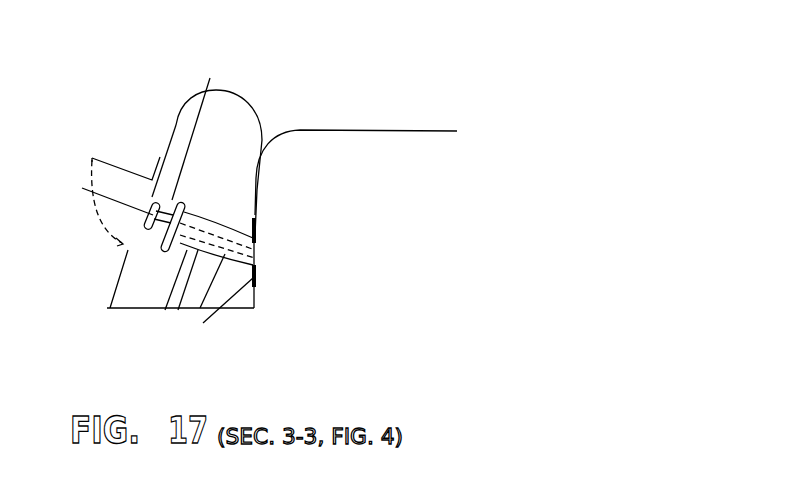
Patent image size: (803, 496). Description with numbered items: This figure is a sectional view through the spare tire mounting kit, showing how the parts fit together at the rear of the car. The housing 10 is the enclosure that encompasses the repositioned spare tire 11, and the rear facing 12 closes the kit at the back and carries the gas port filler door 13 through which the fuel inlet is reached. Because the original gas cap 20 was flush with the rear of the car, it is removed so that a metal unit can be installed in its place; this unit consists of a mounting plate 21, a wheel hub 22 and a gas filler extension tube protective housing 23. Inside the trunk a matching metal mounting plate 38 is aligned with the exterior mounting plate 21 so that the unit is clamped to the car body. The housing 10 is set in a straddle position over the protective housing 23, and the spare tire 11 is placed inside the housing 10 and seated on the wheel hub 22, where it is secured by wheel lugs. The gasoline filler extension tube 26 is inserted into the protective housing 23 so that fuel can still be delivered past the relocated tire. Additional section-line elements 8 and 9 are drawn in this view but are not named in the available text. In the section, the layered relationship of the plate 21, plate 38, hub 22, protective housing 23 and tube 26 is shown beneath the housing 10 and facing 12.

The brace 8 is at (222, 312).
The support member 9 is at (178, 310).
The housing 10 is at (226, 125).
The spare tire 11 is at (163, 207).
The rear facing 12 is at (117, 167).
The gas port filler door 13 is at (131, 173).
The gas cap 20 is at (82, 188).
The mounting plate 21 is at (251, 272).
The wheel hub 22 is at (162, 249).
The gas filler extension tube protective housing 23 is at (165, 310).
The gasoline filler extension tube 26 is at (292, 252).
The matching metal mounting plate 38 is at (256, 228).